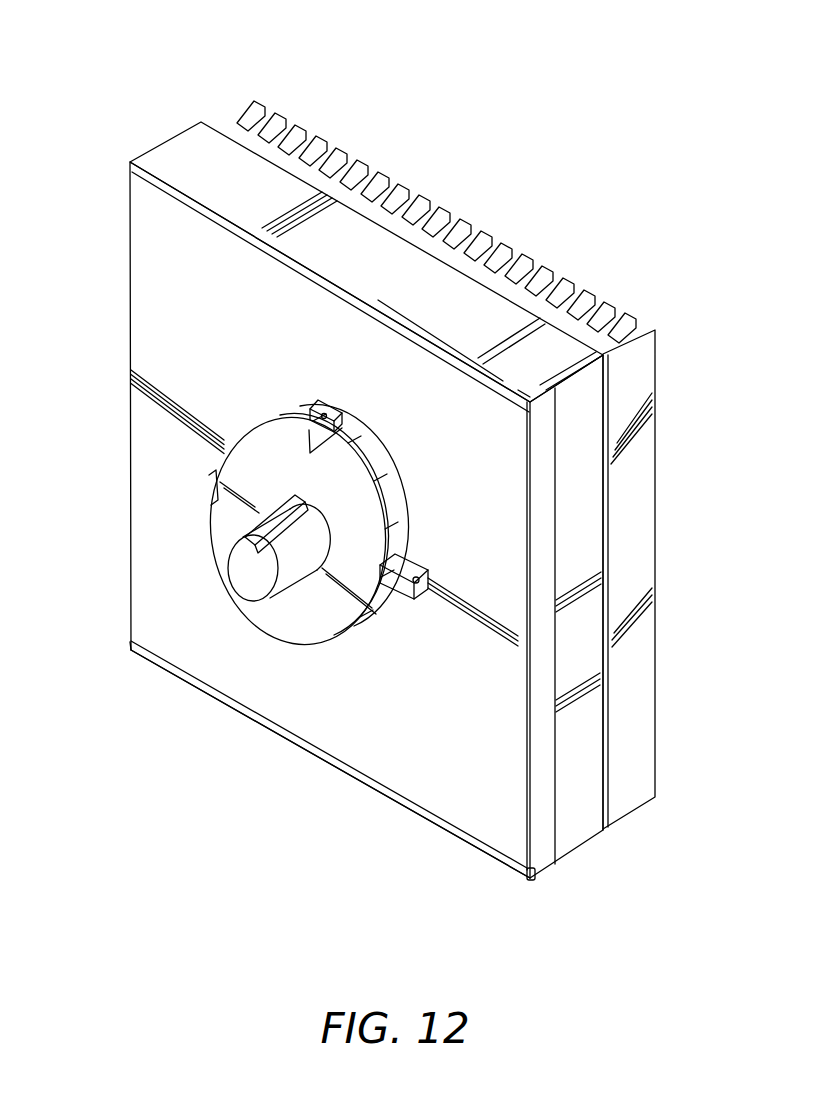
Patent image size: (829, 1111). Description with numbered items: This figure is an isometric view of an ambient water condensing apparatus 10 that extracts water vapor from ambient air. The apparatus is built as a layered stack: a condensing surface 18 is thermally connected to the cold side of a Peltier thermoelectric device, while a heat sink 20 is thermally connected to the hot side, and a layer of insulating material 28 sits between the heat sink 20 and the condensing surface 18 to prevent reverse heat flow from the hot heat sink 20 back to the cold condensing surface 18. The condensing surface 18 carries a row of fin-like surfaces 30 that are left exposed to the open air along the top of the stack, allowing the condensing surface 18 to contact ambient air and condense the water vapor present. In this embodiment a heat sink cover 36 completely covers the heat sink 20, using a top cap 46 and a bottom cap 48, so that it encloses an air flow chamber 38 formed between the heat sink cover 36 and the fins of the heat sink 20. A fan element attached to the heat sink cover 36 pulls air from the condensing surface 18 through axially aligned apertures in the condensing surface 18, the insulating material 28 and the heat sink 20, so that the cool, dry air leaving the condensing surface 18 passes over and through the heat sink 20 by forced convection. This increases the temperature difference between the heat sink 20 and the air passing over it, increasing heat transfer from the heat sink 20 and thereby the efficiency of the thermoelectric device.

The ambient water condensing apparatus 10 is at (673, 62).
The condensing surface 18 is at (640, 528).
The heat sink 20 is at (572, 815).
The insulating material 28 is at (607, 790).
The fin-like surfaces 30 is at (527, 257).
The heat sink cover 36 is at (445, 748).
The air flow chamber 38 is at (288, 610).
The top cap 46 is at (188, 160).
The bottom cap 48 is at (165, 673).